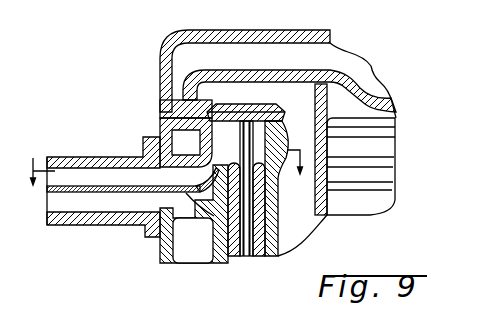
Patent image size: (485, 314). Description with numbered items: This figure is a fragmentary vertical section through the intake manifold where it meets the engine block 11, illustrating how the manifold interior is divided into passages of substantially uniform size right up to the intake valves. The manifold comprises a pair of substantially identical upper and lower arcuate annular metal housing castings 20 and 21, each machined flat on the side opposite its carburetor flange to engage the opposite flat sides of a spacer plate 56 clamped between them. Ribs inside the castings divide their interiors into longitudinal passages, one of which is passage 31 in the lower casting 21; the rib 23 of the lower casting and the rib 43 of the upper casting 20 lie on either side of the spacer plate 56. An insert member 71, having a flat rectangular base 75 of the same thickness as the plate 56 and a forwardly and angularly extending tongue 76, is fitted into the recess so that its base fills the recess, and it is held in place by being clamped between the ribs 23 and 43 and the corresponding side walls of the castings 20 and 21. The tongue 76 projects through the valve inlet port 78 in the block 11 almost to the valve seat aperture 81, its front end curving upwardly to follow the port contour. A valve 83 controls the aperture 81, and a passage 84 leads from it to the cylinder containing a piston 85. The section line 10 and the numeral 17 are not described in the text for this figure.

The section line 10 is at (168, 158).
The engine block 11 is at (373, 58).
The outer tube wall 17 is at (109, 171).
The upper casting 20 is at (103, 184).
The lower casting 21 is at (92, 224).
The rib 23 is at (153, 200).
The longitudinal passage 31 is at (125, 204).
The rib 43 is at (151, 170).
The spacer plate 56 is at (47, 203).
The insert member 71 is at (207, 218).
The base 75 is at (143, 186).
The tongue 76 is at (208, 175).
The valve inlet port 78 is at (178, 238).
The valve seat aperture 81 is at (290, 105).
The valve 83 is at (258, 106).
The passage 84 is at (322, 90).
The piston 85 is at (393, 143).